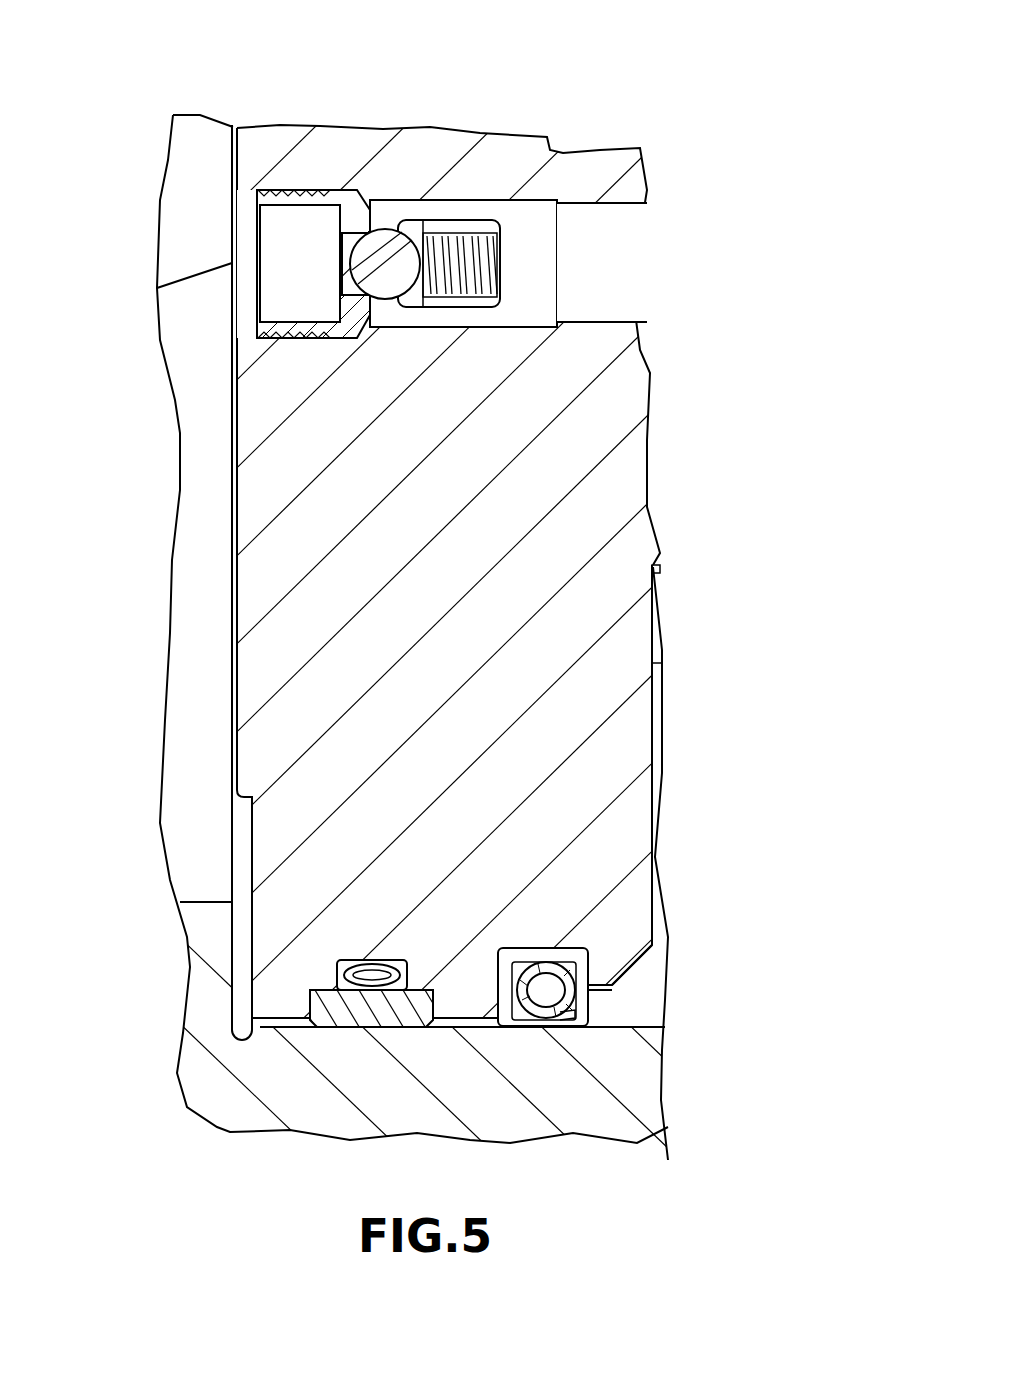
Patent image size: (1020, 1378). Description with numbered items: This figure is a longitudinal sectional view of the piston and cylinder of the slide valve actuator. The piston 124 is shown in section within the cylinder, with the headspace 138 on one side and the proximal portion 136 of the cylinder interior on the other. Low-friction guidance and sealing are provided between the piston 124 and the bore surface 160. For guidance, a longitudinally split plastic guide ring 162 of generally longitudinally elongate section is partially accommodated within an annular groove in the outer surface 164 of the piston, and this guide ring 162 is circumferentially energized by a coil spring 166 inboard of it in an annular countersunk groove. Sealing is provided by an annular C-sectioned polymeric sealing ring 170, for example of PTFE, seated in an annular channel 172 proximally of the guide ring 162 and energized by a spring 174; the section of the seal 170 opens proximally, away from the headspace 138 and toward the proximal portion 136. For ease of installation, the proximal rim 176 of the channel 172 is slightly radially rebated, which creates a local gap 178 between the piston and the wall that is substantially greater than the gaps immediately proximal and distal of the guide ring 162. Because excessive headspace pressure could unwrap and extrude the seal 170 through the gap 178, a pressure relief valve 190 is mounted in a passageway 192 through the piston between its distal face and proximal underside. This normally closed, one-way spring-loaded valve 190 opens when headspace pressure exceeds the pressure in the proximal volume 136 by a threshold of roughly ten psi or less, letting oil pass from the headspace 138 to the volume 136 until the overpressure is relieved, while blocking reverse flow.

The piston 124 is at (615, 475).
The proximal portion of the cylinder interior 136 is at (752, 758).
The headspace 138 is at (206, 690).
The bore surface 160 is at (640, 1027).
The guide ring 162 is at (370, 1017).
The outer surface of the piston 164 is at (470, 1028).
The coil spring 166 is at (350, 985).
The sealing ring 170 is at (548, 1022).
The annular channel 172 is at (600, 994).
The spring 174 is at (590, 1013).
The proximal rim of the channel 176 is at (610, 1000).
The local gap 178 is at (607, 1022).
The pressure relief valve 190 is at (390, 205).
The passageway 192 is at (578, 262).